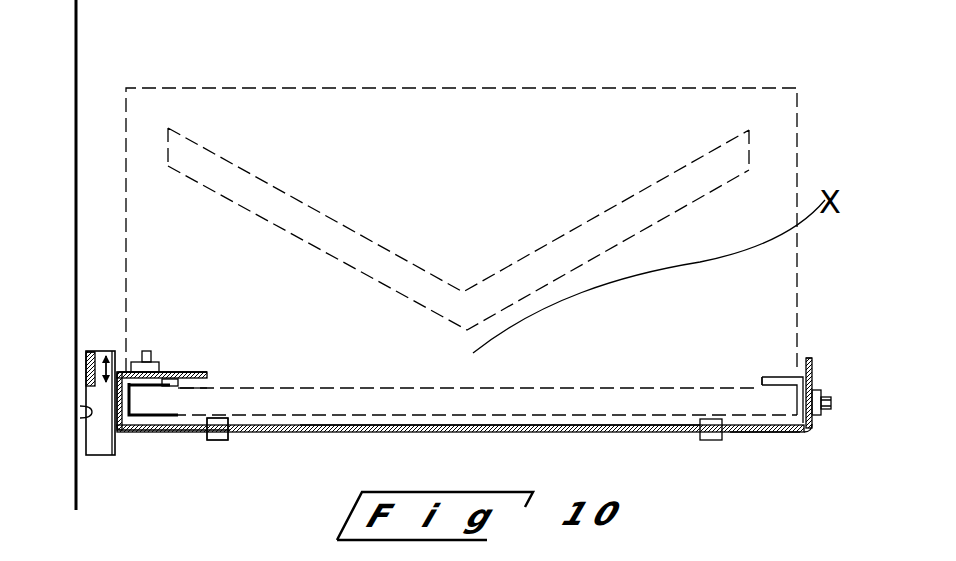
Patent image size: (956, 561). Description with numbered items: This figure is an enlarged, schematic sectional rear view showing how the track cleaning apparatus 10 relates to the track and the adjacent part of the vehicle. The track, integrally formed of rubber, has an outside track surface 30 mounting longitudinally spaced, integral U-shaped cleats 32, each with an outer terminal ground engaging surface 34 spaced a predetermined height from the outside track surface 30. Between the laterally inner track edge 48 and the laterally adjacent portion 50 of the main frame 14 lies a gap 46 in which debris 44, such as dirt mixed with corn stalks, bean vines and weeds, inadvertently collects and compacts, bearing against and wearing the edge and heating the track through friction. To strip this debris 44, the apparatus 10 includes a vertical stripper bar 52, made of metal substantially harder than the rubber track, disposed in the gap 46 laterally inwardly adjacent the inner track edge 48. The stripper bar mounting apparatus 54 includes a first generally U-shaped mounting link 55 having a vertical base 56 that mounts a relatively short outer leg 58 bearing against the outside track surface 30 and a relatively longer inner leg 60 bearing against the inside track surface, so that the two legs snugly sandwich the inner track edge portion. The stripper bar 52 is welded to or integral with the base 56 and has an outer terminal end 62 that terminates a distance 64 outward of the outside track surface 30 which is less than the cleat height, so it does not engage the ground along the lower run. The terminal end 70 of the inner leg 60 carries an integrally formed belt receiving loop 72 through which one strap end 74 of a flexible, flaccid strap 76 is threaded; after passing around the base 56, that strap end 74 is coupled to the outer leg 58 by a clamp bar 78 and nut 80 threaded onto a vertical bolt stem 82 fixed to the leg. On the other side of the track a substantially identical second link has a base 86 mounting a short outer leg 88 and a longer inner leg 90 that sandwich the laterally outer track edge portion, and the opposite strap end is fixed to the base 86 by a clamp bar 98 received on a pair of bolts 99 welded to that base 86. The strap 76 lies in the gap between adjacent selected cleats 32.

The track cleaning apparatus 10 is at (132, 479).
The main frame 14 is at (77, 42).
The outside track surface 30 is at (502, 120).
The cleats 32 is at (325, 210).
The ground engaging surface 34 is at (78, 240).
The debris 44 is at (776, 435).
The gap 46 is at (107, 117).
The laterally inner track edge 48 is at (127, 190).
The laterally adjacent portion of the frame 50 is at (80, 411).
The vertical stripper bar 52 is at (97, 454).
The stripper bar mounting apparatus 54 is at (207, 352).
The first U-shaped mounting link 55 is at (229, 298).
The vertical base 56 is at (118, 396).
The outer leg 58 is at (192, 389).
The inner leg 60 is at (180, 430).
The outer terminal end 62 is at (90, 346).
The distance 64 is at (99, 349).
The terminal end of the inner leg 70 is at (201, 430).
The belt receiving loop 72 is at (224, 440).
The strap end 74 is at (202, 378).
The flexible, flaccid strap 76 is at (437, 441).
The clamp bar 78 is at (178, 368).
The nut 80 is at (124, 371).
The vertical bolt stem 82 is at (146, 348).
The base 86 is at (815, 385).
The outer leg 88 is at (772, 372).
The inner leg 90 is at (747, 432).
The clamp bar 98 is at (821, 418).
The bolts 99 is at (828, 406).